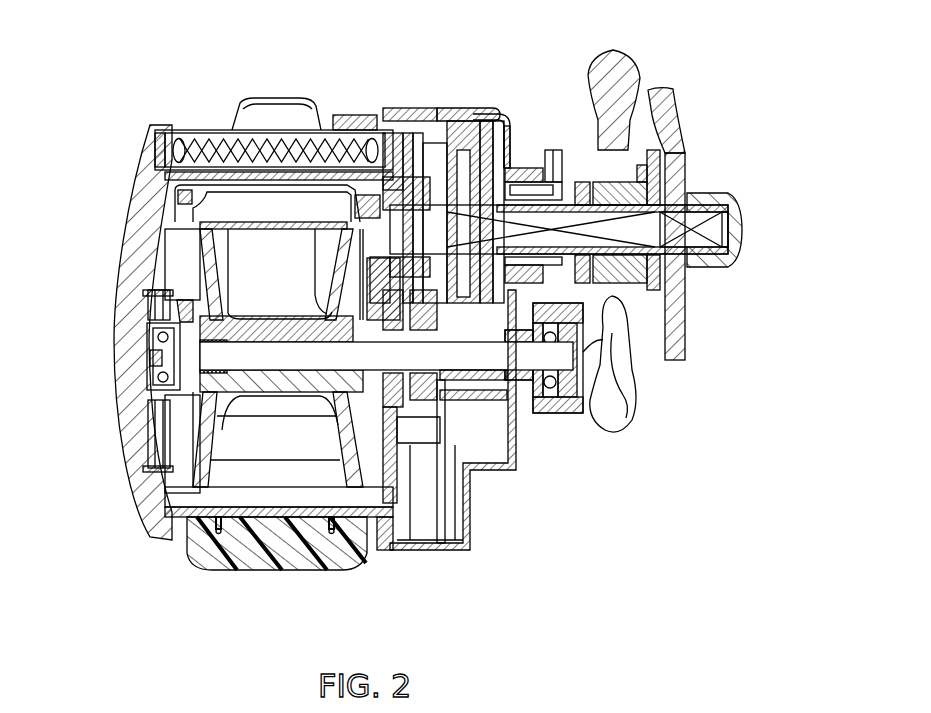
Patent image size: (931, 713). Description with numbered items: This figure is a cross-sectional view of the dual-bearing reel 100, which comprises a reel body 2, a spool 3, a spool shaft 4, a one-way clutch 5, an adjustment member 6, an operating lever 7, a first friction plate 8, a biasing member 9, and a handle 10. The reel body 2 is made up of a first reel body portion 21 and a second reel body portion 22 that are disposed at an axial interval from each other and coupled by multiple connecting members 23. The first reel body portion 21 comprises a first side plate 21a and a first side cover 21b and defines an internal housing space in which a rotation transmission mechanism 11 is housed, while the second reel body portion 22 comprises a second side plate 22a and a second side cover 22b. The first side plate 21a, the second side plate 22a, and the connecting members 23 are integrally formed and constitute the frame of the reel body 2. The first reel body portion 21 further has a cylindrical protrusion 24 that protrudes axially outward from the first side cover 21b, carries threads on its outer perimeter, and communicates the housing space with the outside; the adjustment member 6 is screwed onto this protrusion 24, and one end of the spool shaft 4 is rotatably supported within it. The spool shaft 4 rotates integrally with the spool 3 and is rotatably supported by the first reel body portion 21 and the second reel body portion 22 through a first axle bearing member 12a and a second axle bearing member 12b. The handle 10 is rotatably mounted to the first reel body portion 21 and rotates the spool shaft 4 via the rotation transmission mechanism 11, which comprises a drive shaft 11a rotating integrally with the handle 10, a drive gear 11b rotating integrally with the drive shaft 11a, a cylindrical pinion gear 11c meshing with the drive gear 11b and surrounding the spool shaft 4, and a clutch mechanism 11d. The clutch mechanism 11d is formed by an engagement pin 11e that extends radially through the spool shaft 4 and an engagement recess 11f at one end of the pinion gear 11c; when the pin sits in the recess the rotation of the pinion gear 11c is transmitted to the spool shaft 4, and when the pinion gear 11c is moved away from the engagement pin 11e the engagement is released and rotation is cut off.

The dual-bearing reel 100 is at (272, 66).
The reel body 2 is at (482, 558).
The spool 3 is at (281, 397).
The spool shaft 4 is at (253, 368).
The one-way clutch 5 is at (568, 416).
The adjustment member 6 is at (640, 420).
The operating lever 7 is at (558, 418).
The first friction plate 8 is at (576, 360).
The biasing member 9 is at (548, 416).
The handle 10 is at (687, 362).
The rotation transmission mechanism 11 is at (510, 118).
The drive shaft 11a is at (551, 166).
The drive gear 11b is at (470, 121).
The pinion gear 11c is at (500, 470).
The clutch mechanism 11d is at (382, 552).
The engagement pin 11e is at (321, 320).
The engagement recess 11f is at (369, 116).
The first axle bearing member 12a is at (686, 325).
The second axle bearing member 12b is at (145, 332).
The first reel body portion 21 is at (432, 553).
The first side plate 21a is at (404, 108).
The first side cover 21b is at (455, 108).
The second reel body portion 22 is at (162, 545).
The second side plate 22a is at (167, 125).
The second side cover 22b is at (115, 292).
The connecting members 23 is at (317, 447).
The protrusion 24 is at (537, 425).